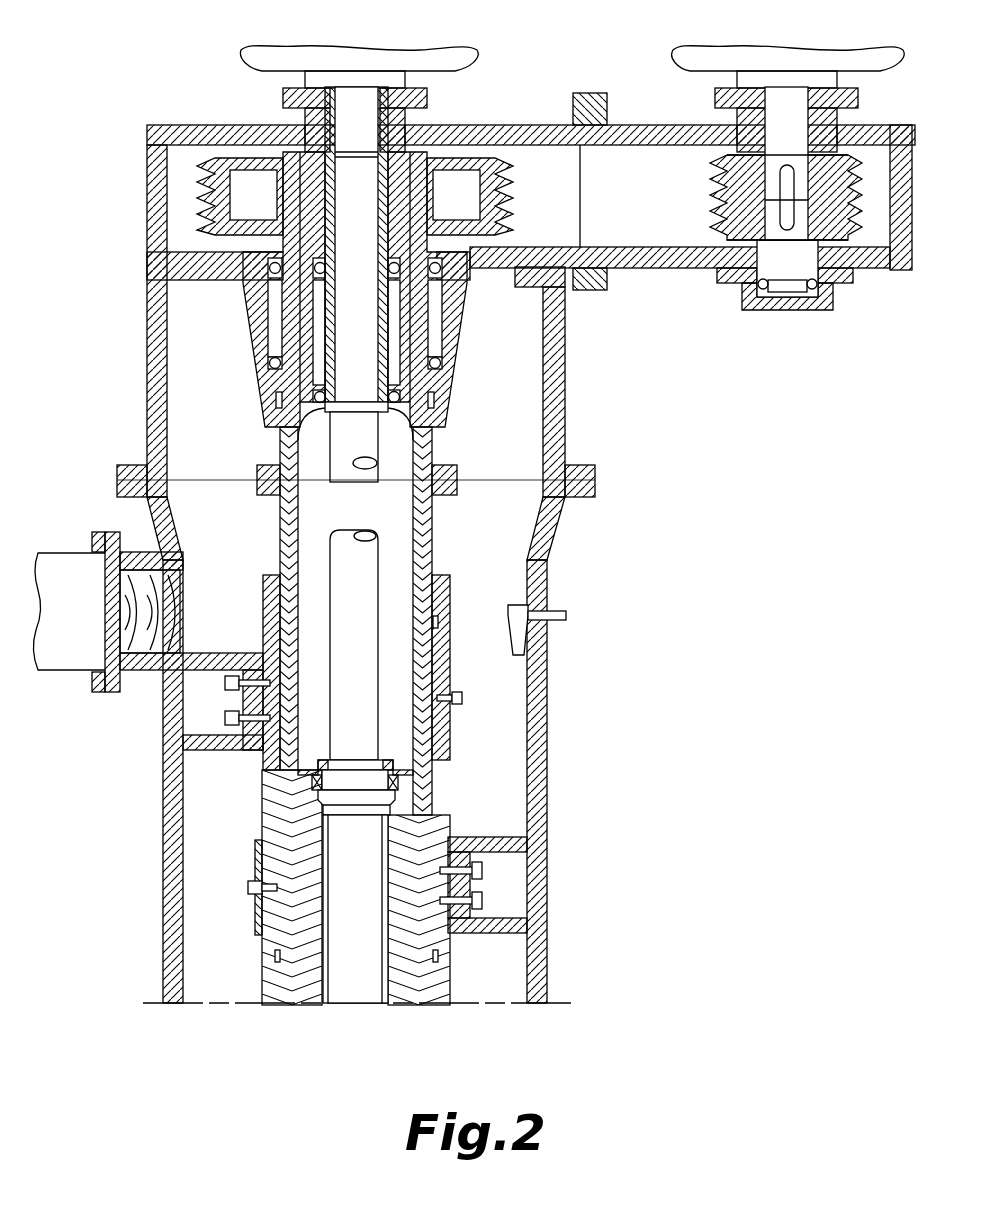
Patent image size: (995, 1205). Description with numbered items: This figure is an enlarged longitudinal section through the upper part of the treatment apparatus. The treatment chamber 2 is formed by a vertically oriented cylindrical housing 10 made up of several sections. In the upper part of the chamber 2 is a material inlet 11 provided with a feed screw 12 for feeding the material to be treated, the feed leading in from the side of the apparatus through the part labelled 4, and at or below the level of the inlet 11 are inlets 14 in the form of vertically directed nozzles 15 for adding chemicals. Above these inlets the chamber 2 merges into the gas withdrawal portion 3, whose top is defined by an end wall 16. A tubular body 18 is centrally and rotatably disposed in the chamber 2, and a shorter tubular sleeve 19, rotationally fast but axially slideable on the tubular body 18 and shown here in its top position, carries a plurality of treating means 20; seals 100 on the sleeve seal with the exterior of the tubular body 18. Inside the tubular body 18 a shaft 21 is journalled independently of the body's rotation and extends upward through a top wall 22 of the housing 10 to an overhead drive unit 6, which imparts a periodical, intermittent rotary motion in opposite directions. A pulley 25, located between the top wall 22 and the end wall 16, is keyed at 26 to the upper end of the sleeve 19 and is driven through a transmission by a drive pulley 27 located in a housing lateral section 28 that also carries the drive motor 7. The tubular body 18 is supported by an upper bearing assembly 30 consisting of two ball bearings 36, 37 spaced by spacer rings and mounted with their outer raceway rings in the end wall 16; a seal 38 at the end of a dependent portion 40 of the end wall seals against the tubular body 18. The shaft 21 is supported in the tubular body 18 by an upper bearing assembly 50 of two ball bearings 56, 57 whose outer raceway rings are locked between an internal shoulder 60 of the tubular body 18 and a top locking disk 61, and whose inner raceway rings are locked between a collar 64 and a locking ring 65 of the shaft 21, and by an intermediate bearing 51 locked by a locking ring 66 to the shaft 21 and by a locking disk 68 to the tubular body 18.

The treatment chamber 2 is at (491, 818).
The gas withdrawal portion 3 is at (199, 458).
The inlet pipe 4 is at (60, 553).
The overhead drive unit 6 is at (318, 52).
The drive motor 7 is at (745, 52).
The cylindrical housing 10 is at (165, 938).
The inlet 11 is at (142, 553).
The feed screw 12 is at (148, 655).
The inlets 14 is at (560, 620).
The nozzles 15 is at (515, 608).
The end wall 16 is at (200, 252).
The tubular body 18 is at (435, 528).
The tubular sleeve 19 is at (263, 614).
The treating means 20 is at (200, 752).
The shaft 21 is at (360, 960).
The top wall 22 is at (182, 125).
The pulley 25 is at (200, 172).
The key 26 is at (280, 212).
The drive pulley 27 is at (862, 215).
The housing lateral section 28 is at (662, 270).
The upper bearing assembly 30 is at (268, 333).
The ball bearing 36 is at (268, 372).
The ball bearing 37 is at (262, 295).
The seal 38 is at (437, 412).
The dependent portion 40 is at (455, 340).
The upper bearing assembly 50 is at (445, 330).
The intermediate bearing 51 is at (315, 782).
The ball bearing 56 is at (378, 266).
The ball bearing 57 is at (440, 397).
The internal shoulder 60 is at (318, 415).
The top locking disk 61 is at (290, 152).
The collar 64 is at (370, 412).
The locking ring 65 is at (430, 115).
The locking ring 66 is at (428, 760).
The locking disk 68 is at (415, 772).
The seals 100 is at (440, 622).